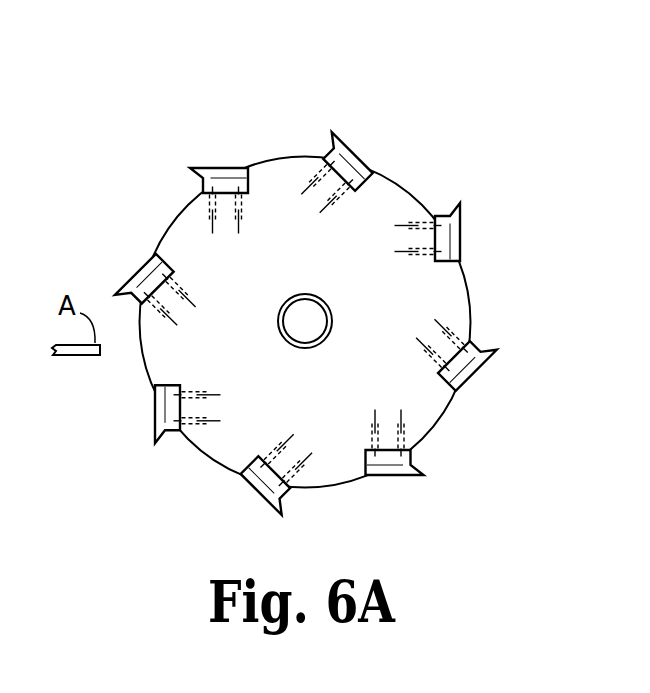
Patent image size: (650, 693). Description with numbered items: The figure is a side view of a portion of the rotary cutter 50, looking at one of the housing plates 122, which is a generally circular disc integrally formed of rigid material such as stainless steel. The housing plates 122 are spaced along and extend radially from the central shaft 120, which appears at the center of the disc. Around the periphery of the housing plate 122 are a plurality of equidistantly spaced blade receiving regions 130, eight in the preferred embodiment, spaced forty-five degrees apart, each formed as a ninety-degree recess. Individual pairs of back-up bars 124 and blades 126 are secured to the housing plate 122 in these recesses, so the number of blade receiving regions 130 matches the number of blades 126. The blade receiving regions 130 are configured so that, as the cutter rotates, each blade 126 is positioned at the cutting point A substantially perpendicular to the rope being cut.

The rotary cutter 50 is at (335, 297).
The central shaft 120 is at (305, 321).
The housing plates 122 is at (466, 282).
The back-up bars 124 is at (438, 222).
The blades 126 is at (481, 371).
The blade receiving regions 130 is at (240, 182).